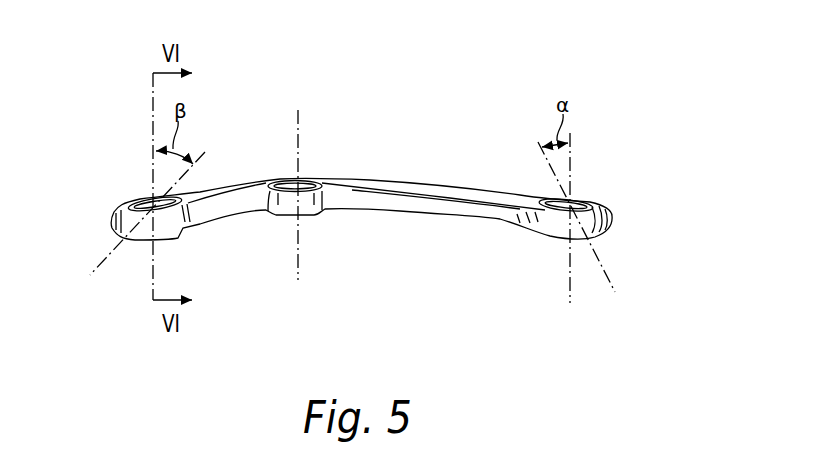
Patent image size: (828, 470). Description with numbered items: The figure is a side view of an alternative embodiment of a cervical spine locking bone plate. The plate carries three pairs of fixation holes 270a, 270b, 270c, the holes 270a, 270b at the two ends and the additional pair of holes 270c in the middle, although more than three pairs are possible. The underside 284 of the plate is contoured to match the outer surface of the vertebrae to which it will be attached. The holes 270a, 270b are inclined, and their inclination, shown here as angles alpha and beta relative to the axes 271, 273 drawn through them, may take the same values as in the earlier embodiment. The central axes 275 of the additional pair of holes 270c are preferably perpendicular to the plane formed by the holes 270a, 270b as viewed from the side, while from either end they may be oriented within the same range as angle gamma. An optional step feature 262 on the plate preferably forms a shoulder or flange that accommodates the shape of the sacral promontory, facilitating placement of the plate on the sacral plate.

The step feature 262 is at (186, 240).
The fixation holes 270a is at (148, 197).
The fixation holes 270b is at (584, 202).
The additional pair of fixation holes 270c is at (306, 177).
The first axis 271 is at (152, 158).
The second axis 273 is at (572, 158).
The central axes 275 is at (299, 120).
The underside 284 is at (439, 216).